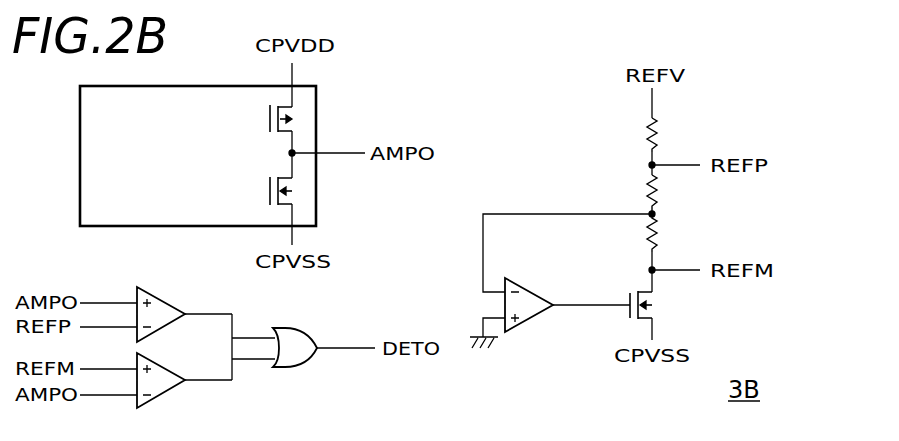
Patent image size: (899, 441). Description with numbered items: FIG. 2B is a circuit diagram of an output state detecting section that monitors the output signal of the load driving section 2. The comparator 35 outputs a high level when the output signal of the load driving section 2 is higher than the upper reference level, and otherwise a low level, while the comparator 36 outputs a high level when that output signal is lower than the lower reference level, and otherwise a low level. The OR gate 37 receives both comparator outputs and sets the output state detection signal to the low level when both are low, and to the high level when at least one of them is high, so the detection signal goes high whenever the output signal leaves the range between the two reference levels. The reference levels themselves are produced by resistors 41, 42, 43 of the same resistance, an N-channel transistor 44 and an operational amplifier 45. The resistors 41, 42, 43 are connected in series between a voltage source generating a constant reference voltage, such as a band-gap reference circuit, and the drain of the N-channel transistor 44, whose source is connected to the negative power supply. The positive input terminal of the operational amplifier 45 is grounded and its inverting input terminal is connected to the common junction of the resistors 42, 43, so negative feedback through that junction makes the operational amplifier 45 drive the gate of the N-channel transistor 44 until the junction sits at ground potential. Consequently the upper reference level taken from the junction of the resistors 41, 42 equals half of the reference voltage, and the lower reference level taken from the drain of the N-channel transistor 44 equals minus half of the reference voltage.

The load driving section 2 is at (185, 85).
The comparator 35 is at (197, 291).
The comparator 36 is at (197, 357).
The OR gate 37 is at (298, 327).
The resistor 41 is at (642, 135).
The resistor 42 is at (640, 196).
The resistor 43 is at (640, 238).
The N-channel transistor 44 is at (663, 306).
The operational amplifier 45 is at (532, 290).